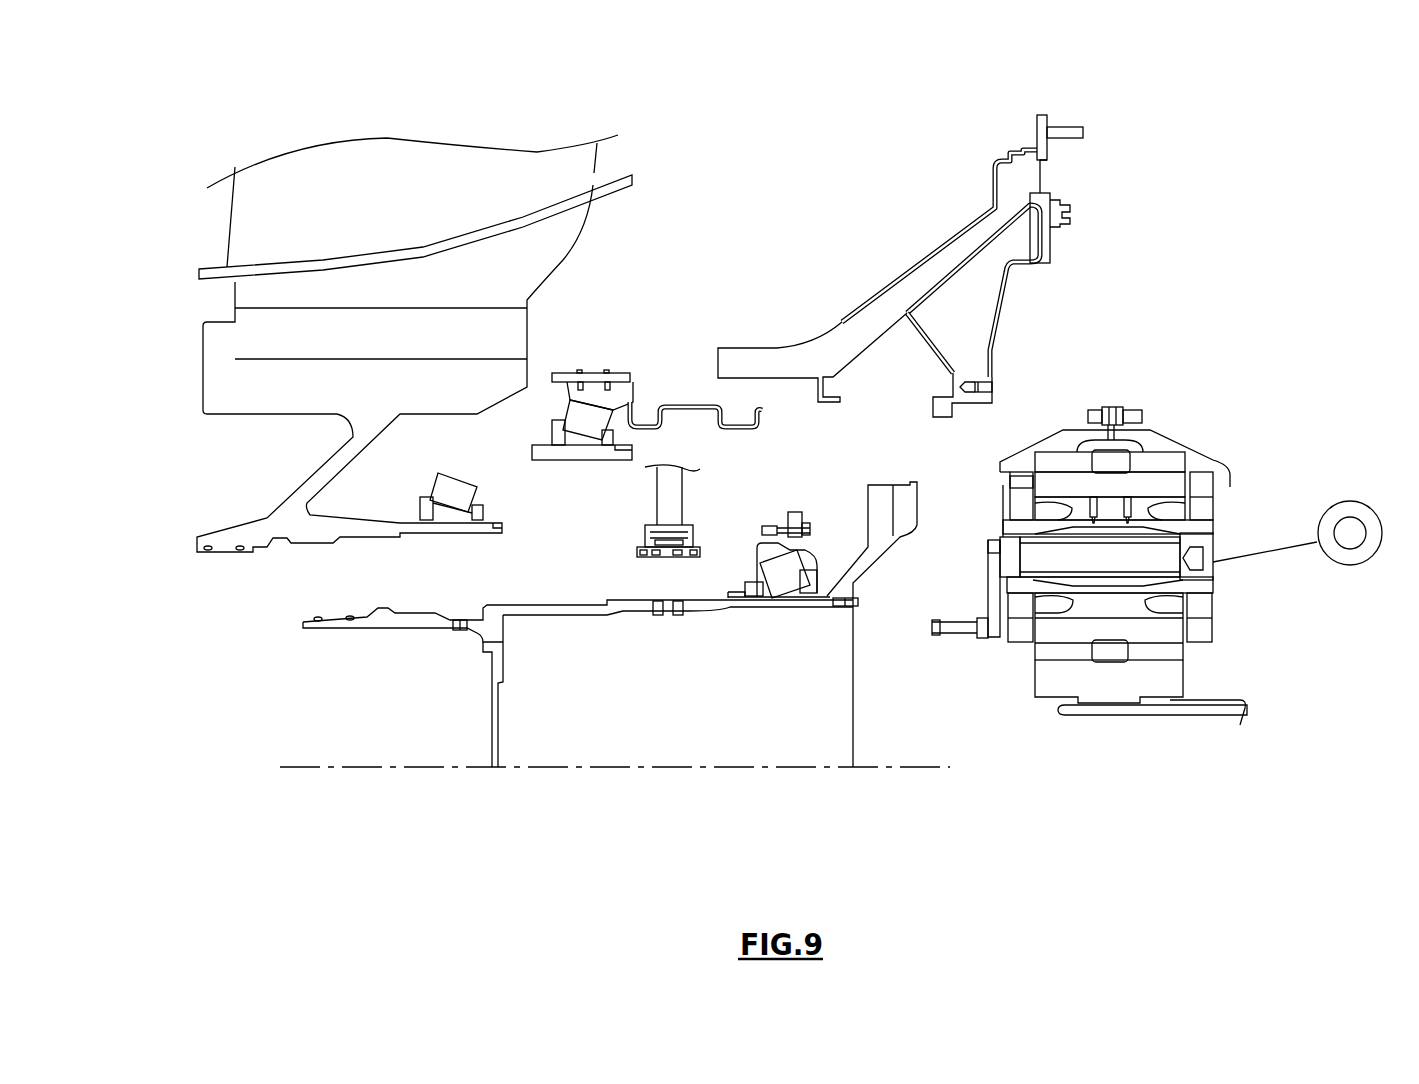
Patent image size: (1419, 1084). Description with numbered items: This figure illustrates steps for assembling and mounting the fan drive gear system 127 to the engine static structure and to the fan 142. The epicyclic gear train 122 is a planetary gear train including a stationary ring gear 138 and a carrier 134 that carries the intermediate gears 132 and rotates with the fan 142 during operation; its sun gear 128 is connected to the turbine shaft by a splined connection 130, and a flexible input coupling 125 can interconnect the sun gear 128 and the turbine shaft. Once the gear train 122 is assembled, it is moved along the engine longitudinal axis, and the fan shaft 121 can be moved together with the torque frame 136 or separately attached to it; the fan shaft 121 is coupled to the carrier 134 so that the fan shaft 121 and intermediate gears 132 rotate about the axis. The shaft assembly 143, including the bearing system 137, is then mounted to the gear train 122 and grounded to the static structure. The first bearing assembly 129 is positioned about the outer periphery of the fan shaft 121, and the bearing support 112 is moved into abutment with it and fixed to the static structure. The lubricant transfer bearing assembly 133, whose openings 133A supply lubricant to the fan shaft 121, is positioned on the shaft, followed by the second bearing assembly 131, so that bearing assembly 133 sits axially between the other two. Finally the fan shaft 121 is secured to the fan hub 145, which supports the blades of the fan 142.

The fan drive gear system 127 is at (182, 90).
The fan 142 is at (410, 198).
The bearing support 112 is at (967, 225).
The second bearing assembly 131 is at (618, 372).
The lubricant transfer bearing assembly 133 is at (647, 525).
The openings 133A is at (645, 546).
The torque frame 136 is at (882, 498).
The first bearing assembly 129 is at (800, 553).
The fan hub 145 is at (262, 517).
The fan shaft 121 is at (345, 630).
The shaft assembly 143 is at (449, 820).
The bearing system 137 is at (681, 830).
The ring gear 138 is at (1170, 437).
The epicyclic gear train 122 is at (1224, 505).
The intermediate gears 132 is at (1162, 635).
The carrier 134 is at (1224, 626).
The sun gear 128 is at (1172, 678).
The splined connection 130 is at (1125, 705).
The flexible input coupling 125 is at (1207, 715).